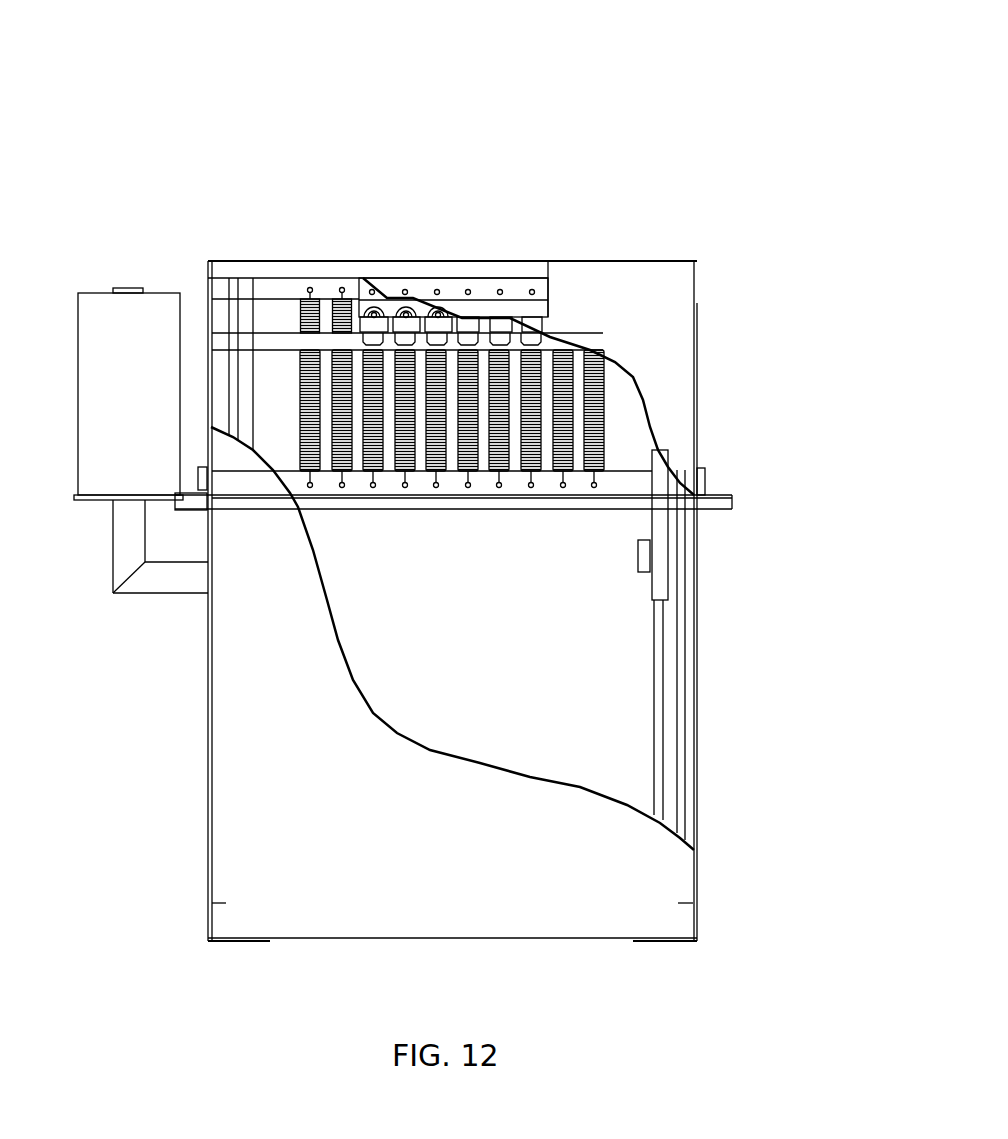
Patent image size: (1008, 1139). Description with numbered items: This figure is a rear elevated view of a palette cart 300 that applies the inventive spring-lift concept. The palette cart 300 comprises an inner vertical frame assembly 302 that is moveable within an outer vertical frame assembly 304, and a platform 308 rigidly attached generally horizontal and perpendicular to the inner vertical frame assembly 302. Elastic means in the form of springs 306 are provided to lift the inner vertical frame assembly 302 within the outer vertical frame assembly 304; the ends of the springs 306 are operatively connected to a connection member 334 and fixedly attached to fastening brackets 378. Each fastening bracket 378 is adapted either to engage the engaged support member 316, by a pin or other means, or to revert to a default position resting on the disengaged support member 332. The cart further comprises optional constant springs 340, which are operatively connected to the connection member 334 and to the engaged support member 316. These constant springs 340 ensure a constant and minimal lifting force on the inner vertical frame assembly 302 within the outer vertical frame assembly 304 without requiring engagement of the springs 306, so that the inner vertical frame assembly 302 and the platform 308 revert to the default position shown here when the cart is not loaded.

The palette cart 300 is at (464, 477).
The inner vertical frame assembly 302 is at (612, 503).
The outer vertical frame assembly 304 is at (707, 305).
The springs 306 is at (448, 413).
The platform 308 is at (723, 503).
The engaged support member 316 is at (331, 290).
The disengaged support member 332 is at (322, 342).
The connection member 334 is at (624, 483).
The constant springs 340 is at (342, 368).
The fastening brackets 378 is at (467, 318).